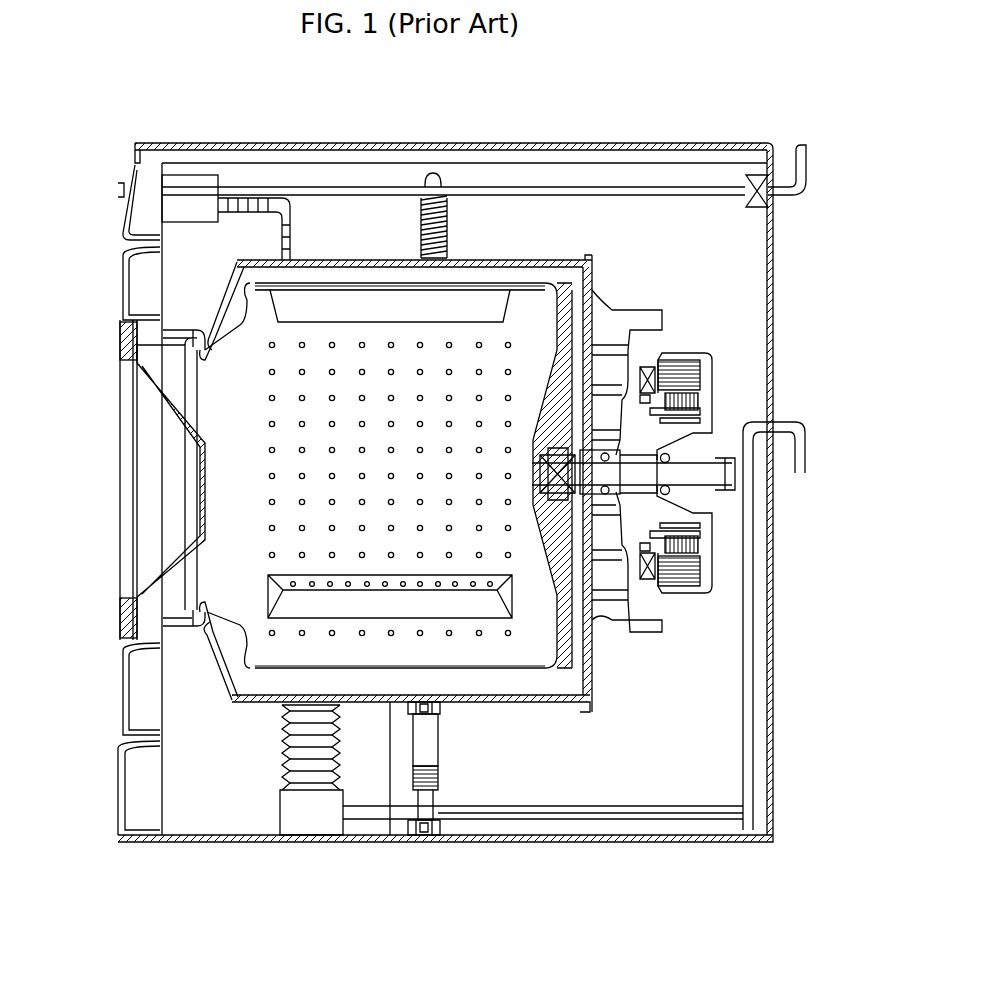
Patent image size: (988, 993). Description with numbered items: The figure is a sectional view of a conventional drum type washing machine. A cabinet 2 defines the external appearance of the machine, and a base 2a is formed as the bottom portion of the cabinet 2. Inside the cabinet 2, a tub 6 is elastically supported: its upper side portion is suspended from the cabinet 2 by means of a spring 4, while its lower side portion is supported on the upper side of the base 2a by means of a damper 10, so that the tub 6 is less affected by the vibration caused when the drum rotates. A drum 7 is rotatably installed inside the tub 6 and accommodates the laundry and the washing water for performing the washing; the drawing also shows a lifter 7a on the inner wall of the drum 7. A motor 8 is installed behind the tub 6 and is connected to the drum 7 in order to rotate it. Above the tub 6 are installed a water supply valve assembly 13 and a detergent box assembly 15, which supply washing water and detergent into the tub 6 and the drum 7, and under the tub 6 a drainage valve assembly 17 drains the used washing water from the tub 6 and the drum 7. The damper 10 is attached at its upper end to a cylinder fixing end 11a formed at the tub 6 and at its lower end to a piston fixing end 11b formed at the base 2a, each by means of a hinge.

The cabinet 2 is at (774, 315).
The base 2a is at (580, 843).
The spring 4 is at (435, 198).
The tub 6 is at (248, 297).
The drum 7 is at (215, 325).
The lifter 7a is at (273, 592).
The motor 8 is at (705, 380).
The damper 10 is at (442, 760).
The cylinder fixing end 11a is at (413, 713).
The piston fixing end 11b is at (420, 834).
The water supply valve assembly 13 is at (757, 175).
The detergent box assembly 15 is at (157, 208).
The drainage valve assembly 17 is at (270, 810).